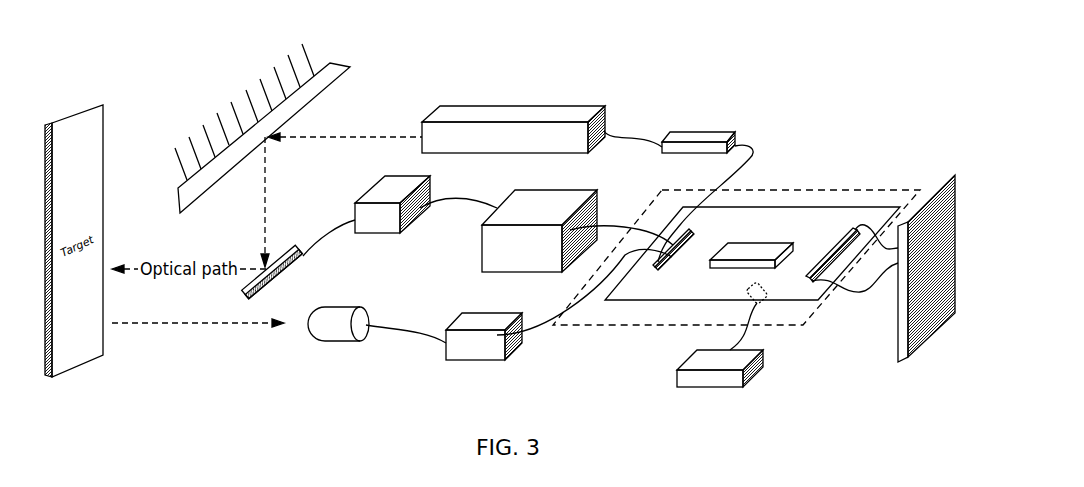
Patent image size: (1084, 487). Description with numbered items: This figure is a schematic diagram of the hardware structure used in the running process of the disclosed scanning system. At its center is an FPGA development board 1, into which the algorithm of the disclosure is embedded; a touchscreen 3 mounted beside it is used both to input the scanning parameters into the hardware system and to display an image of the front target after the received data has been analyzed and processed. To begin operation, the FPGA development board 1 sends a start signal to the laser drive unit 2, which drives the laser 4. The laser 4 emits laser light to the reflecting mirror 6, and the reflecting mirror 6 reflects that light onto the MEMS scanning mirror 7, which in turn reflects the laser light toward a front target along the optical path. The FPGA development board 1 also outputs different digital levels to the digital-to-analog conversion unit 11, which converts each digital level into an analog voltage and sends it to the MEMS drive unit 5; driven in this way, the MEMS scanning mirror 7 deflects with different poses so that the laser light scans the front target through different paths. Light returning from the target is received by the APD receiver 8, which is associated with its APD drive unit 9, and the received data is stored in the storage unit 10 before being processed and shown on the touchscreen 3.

The FPGA development board 1 is at (736, 230).
The laser drive unit 2 is at (690, 162).
The touchscreen 3 is at (919, 212).
The laser 4 is at (513, 97).
The MEMS drive unit 5 is at (400, 161).
The reflecting mirror 6 is at (294, 117).
The MEMS scanning mirror 7 is at (240, 313).
The APD receiver 8 is at (362, 344).
The APD drive unit 9 is at (539, 329).
The storage unit 10 is at (673, 375).
The digital-to-analog conversion unit 11 is at (577, 279).